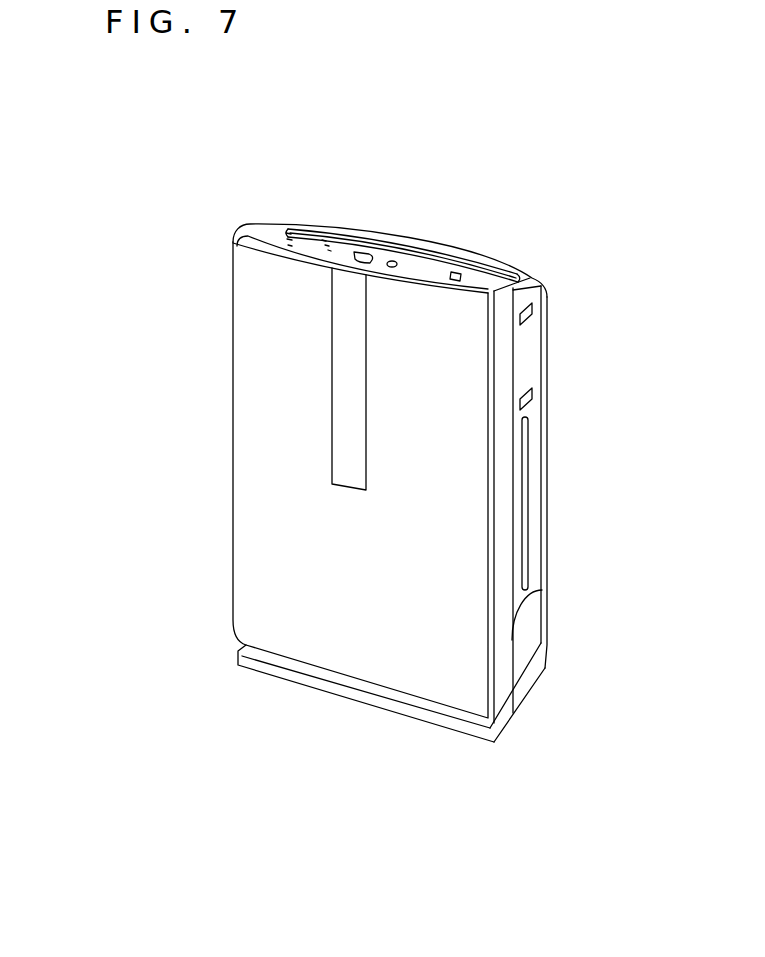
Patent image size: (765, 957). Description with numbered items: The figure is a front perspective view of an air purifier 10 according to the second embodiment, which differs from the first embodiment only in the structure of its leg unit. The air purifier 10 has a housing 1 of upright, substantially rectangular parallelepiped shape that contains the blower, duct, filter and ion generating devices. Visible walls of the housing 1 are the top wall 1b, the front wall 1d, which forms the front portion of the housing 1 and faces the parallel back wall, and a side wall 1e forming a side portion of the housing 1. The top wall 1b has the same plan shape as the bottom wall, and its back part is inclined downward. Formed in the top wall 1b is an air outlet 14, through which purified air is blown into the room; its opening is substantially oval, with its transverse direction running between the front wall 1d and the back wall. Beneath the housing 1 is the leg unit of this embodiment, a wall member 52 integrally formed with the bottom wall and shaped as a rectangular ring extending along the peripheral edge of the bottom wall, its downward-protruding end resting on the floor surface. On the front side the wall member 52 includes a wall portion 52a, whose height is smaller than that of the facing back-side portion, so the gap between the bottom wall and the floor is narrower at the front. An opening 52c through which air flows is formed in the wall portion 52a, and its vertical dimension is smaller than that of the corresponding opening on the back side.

The air purifier 10 is at (293, 198).
The housing 1 is at (232, 320).
The top wall 1b is at (263, 235).
The front wall 1d is at (253, 457).
The side wall 1e is at (502, 358).
The air outlet 14 is at (405, 248).
The wall member 52 is at (527, 698).
The wall portion 52a is at (462, 733).
The opening 52c is at (273, 667).